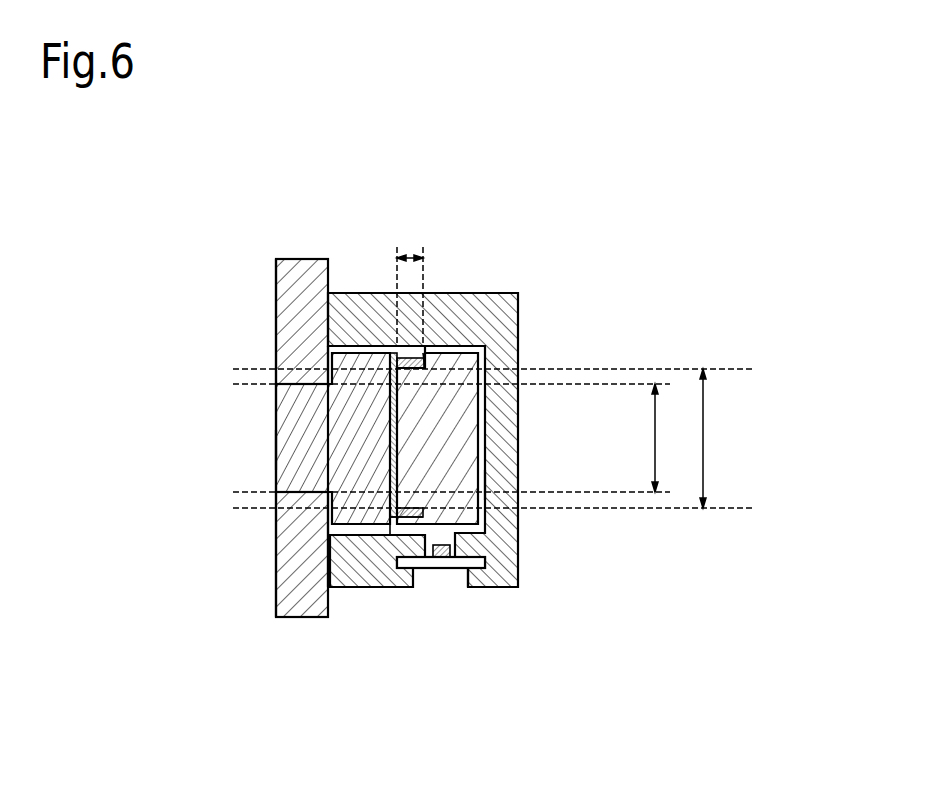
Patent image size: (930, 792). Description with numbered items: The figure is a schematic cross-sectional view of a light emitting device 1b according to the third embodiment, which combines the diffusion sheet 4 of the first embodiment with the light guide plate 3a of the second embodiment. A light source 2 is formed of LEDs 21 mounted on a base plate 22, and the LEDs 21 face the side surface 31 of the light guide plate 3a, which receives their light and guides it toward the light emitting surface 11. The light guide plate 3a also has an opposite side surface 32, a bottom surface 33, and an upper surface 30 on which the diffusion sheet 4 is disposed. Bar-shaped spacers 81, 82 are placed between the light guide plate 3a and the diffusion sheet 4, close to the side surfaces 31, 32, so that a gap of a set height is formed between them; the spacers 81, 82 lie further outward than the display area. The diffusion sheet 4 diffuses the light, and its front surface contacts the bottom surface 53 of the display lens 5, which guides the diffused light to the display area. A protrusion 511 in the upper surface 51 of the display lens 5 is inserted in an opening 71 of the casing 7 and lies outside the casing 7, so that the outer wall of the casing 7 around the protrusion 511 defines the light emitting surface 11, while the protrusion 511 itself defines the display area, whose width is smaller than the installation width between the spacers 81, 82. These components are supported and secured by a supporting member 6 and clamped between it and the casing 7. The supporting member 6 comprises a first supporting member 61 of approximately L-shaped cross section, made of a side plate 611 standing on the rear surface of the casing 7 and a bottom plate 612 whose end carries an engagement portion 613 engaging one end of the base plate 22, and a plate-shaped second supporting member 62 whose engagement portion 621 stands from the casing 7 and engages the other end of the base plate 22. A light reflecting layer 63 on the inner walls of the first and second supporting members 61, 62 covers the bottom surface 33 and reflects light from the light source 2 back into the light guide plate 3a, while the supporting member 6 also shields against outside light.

The light emitting device 1b is at (520, 212).
The light source 2 is at (442, 605).
The LED 21 is at (449, 569).
The base plate 22 is at (426, 569).
The light guide plate 3a is at (488, 358).
The upper surface 30 is at (417, 361).
The side surface 31 is at (497, 558).
The side surface 32 is at (511, 294).
The bottom surface 33 is at (483, 462).
The diffusion sheet 4 is at (328, 604).
The display lens 5 is at (302, 405).
The upper surface 51 is at (277, 407).
The protrusion 511 is at (277, 452).
The bottom surface 53 is at (352, 348).
The supporting member 6 is at (456, 460).
The first supporting member 61 is at (492, 437).
The side plate 611 is at (391, 345).
The bottom plate 612 is at (507, 362).
The engagement portion 613 is at (517, 582).
The second supporting member 62 is at (350, 642).
The engagement portion 621 is at (382, 560).
The light reflecting layer 63 is at (360, 531).
The casing 7 is at (298, 262).
The opening 71 is at (293, 490).
The spacer 81 is at (424, 354).
The spacer 82 is at (368, 580).
The light emitting surface 11 is at (243, 429).